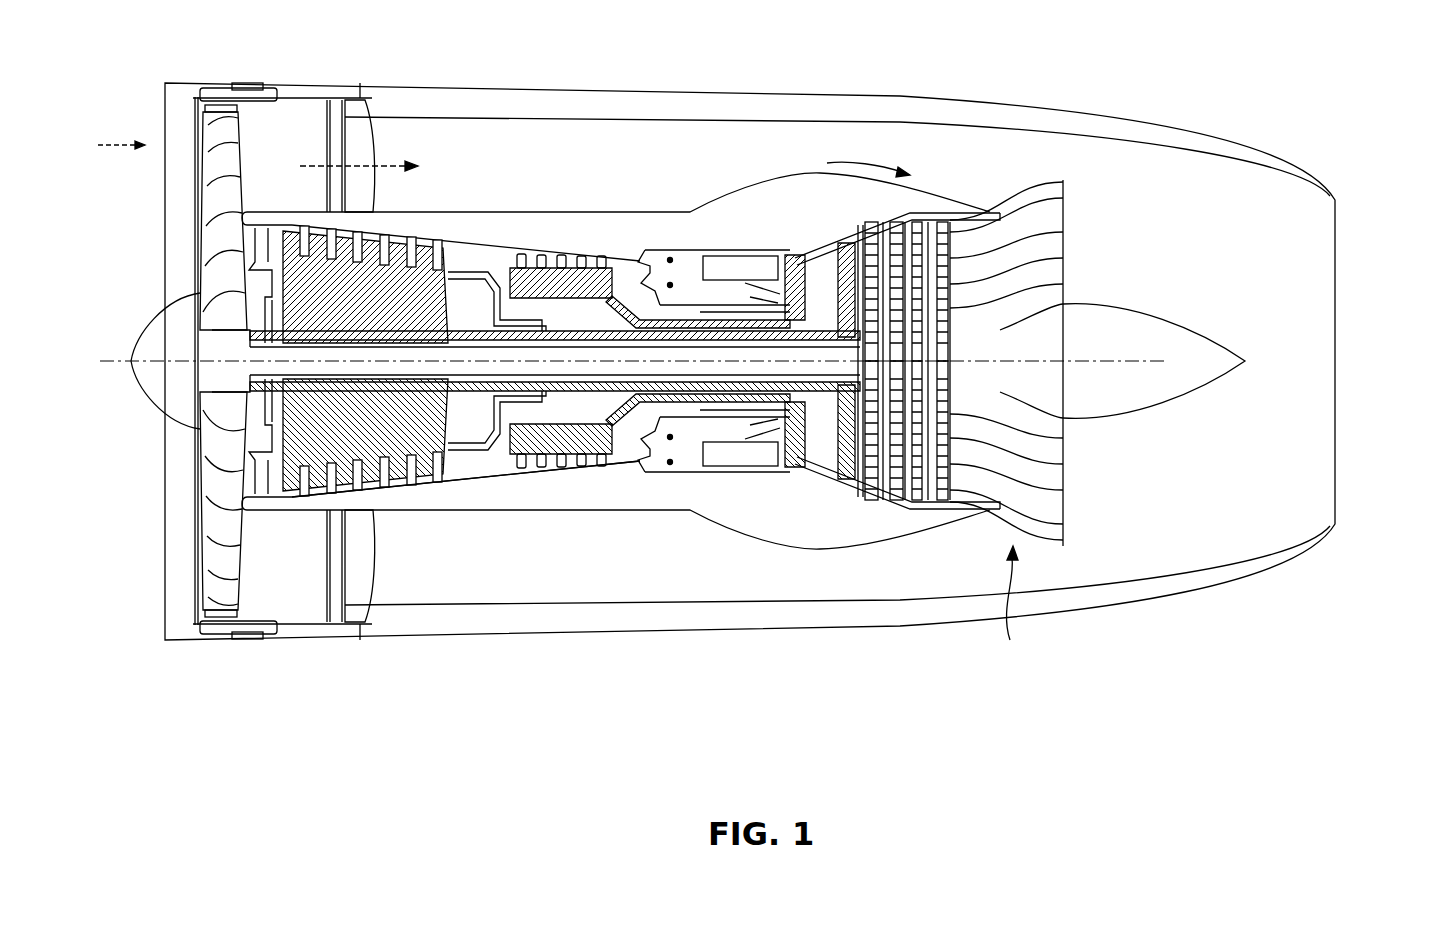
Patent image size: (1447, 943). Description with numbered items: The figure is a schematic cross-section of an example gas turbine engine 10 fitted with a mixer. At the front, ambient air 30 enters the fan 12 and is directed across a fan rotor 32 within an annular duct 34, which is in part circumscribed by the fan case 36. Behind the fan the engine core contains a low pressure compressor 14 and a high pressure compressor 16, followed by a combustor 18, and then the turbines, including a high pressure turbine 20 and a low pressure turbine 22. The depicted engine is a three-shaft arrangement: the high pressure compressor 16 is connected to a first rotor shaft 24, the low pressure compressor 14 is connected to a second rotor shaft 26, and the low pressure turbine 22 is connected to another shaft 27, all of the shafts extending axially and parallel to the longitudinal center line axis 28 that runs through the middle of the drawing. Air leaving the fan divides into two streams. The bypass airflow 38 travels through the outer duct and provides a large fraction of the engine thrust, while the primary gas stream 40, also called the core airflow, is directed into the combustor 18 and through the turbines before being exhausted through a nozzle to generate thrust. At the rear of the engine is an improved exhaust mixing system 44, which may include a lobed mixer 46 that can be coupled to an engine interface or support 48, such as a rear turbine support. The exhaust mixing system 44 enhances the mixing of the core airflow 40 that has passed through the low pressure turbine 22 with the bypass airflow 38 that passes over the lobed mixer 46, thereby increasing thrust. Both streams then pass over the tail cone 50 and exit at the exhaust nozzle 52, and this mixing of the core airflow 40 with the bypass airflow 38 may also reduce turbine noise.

The gas turbine engine 10 is at (733, 47).
The fan 12 is at (141, 552).
The low pressure compressor 14 is at (395, 295).
The high pressure compressor 16 is at (563, 462).
The combustor 18 is at (682, 463).
The high pressure turbine 20 is at (797, 252).
The low pressure turbine 22 is at (850, 215).
The first rotor shaft 24 is at (716, 412).
The second rotor shaft 26 is at (810, 460).
The shaft 27 is at (828, 458).
The longitudinal center line axis 28 is at (1152, 352).
The ambient air 30 is at (136, 100).
The fan rotor 32 is at (218, 640).
The annular duct 34 is at (358, 585).
The fan case 36 is at (278, 645).
The bypass airflow 38 is at (405, 162).
The primary gas stream 40 is at (508, 264).
The exhaust mixing system 44 is at (1009, 611).
The lobed mixer 46 is at (1063, 232).
The engine interface or support 48 is at (933, 215).
The tail cone 50 is at (1140, 405).
The exhaust nozzle 52 is at (1372, 222).